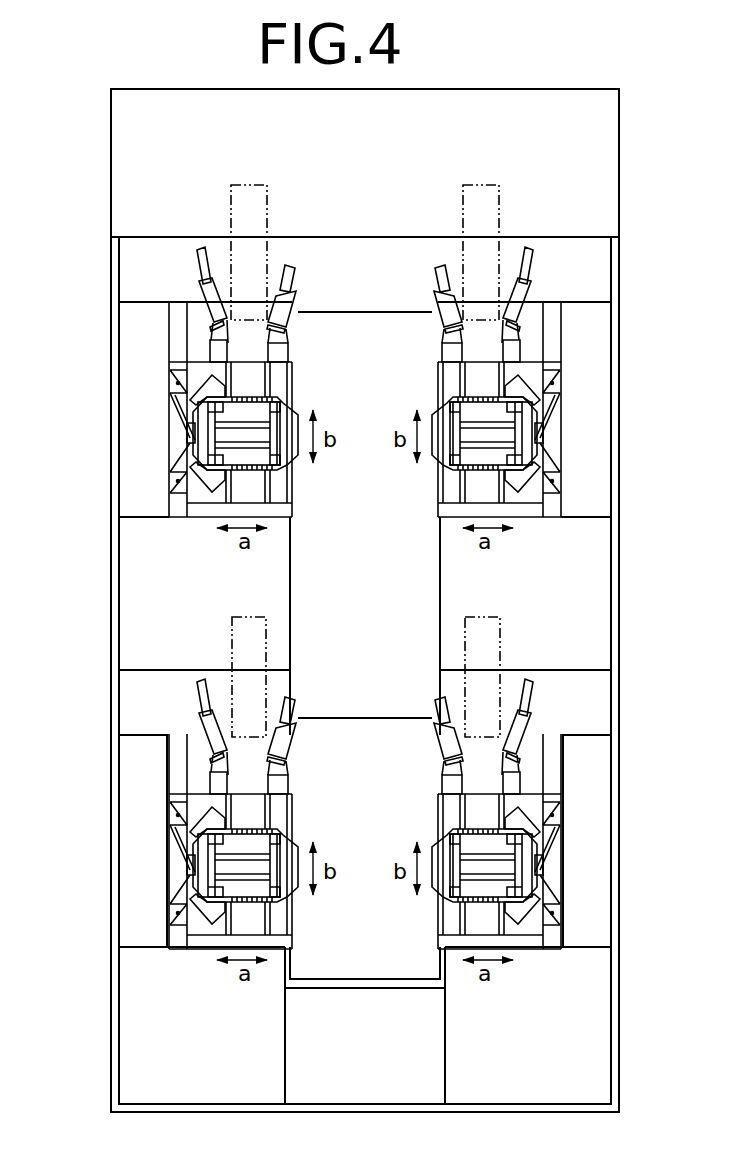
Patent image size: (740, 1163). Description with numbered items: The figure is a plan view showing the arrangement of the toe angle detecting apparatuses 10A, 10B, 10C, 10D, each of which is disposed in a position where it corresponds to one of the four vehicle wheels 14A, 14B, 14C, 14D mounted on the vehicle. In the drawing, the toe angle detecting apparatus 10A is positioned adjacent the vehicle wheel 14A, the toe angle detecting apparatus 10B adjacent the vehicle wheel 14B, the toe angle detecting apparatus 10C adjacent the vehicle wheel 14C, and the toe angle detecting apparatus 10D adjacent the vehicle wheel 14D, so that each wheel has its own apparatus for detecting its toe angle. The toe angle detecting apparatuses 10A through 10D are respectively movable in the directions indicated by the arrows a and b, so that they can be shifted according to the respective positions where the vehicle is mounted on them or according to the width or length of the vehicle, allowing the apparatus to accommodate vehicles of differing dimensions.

The toe angle detecting apparatus 10A is at (158, 863).
The toe angle detecting apparatus 10B is at (573, 823).
The toe angle detecting apparatus 10C is at (158, 406).
The toe angle detecting apparatus 10D is at (573, 432).
The vehicle wheel 14A is at (262, 636).
The vehicle wheel 14B is at (489, 642).
The vehicle wheel 14C is at (246, 196).
The vehicle wheel 14D is at (487, 196).